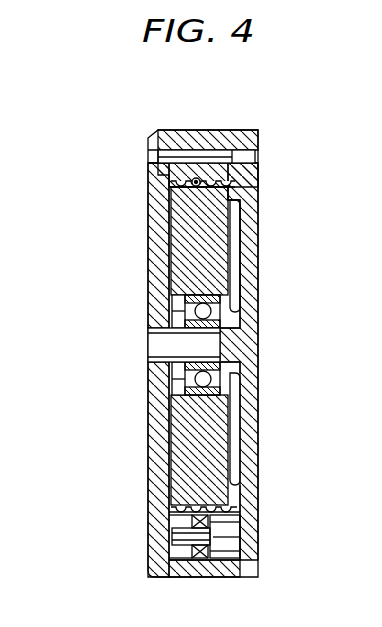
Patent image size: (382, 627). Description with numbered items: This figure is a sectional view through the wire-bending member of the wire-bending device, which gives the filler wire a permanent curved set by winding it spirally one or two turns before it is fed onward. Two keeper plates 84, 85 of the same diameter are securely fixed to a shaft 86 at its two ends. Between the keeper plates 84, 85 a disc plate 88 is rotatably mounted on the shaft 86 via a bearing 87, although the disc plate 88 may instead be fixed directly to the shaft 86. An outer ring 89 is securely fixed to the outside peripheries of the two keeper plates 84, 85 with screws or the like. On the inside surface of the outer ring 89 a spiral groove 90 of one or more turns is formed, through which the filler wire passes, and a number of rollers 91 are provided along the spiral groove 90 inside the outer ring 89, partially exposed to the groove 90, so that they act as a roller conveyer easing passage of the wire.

The keeper plate 84 is at (157, 423).
The keeper plate 85 is at (245, 346).
The shaft 86 is at (157, 352).
The bearing 87 is at (197, 312).
The disc plate 88 is at (215, 460).
The outer ring 89 is at (183, 137).
The spiral groove 90 is at (197, 177).
The rollers 91 is at (240, 550).